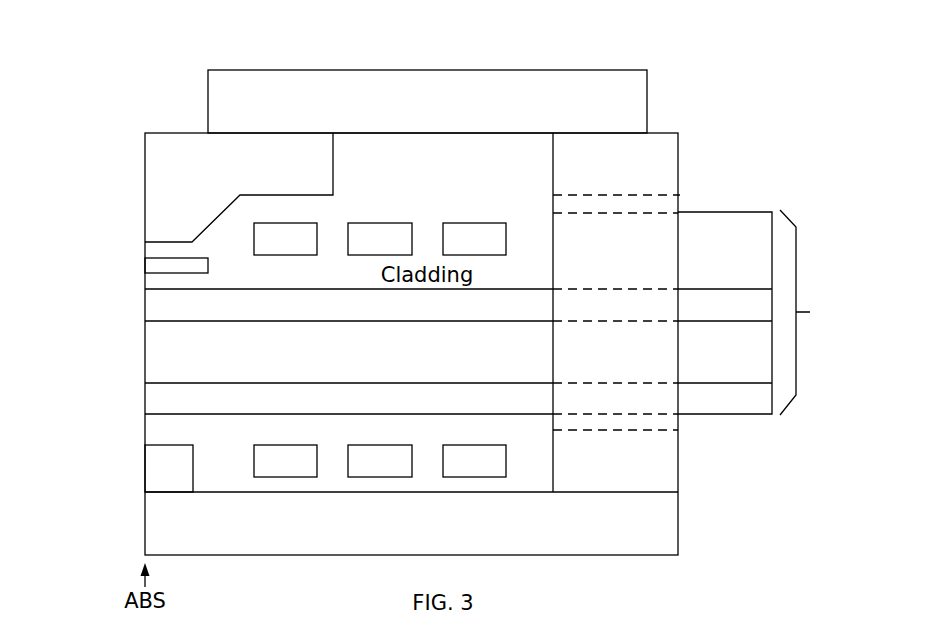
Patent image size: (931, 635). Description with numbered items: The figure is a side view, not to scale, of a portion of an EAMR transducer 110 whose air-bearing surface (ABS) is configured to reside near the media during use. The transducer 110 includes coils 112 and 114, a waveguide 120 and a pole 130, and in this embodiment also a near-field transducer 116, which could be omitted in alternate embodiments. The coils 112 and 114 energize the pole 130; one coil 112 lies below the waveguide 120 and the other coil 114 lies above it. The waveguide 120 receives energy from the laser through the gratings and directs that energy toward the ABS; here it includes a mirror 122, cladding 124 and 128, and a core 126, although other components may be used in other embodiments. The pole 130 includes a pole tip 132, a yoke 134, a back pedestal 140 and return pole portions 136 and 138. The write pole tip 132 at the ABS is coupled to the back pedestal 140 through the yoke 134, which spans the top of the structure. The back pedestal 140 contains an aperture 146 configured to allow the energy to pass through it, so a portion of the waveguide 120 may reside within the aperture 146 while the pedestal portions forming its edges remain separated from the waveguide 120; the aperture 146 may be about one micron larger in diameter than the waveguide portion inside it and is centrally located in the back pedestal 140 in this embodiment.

The EAMR transducer 110 is at (463, 35).
The pole 130 is at (133, 112).
The yoke 134 is at (208, 102).
The pole tip 132 is at (145, 187).
The near-field transducer 116 is at (145, 264).
The coil 114 is at (530, 226).
The core 126 is at (145, 312).
The cladding 124 is at (145, 353).
The mirror 122 is at (145, 408).
The return pole portion 138 is at (145, 462).
The coil 112 is at (230, 471).
The return pole portion 136 is at (145, 525).
The back pedestal 140 is at (678, 462).
The cladding 128 is at (742, 212).
The aperture 146 is at (710, 424).
The waveguide 120 is at (809, 312).